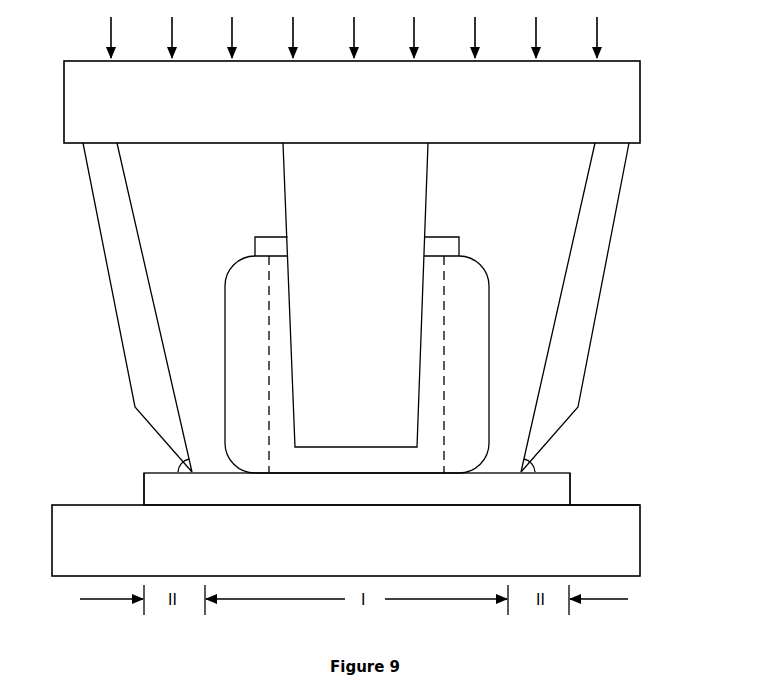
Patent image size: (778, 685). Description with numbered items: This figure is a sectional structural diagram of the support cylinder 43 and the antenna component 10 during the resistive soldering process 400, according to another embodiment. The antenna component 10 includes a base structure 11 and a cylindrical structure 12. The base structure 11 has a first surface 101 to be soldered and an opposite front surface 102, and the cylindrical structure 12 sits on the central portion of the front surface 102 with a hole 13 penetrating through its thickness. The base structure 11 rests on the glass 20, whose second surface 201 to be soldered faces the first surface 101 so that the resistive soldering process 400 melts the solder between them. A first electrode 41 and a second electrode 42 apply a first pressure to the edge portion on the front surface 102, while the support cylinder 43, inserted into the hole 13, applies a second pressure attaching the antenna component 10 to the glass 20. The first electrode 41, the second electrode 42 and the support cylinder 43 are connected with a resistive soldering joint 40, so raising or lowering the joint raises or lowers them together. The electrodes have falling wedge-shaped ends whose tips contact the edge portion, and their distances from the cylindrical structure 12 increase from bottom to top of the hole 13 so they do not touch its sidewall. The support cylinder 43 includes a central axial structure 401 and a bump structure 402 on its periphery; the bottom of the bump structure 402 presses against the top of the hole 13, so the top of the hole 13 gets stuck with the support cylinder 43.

The resistive soldering process 400 is at (598, 33).
The resistive soldering joint 40 is at (623, 101).
The support cylinder 43 is at (307, 295).
The central axial structure 401 is at (300, 177).
The bump structure 402 is at (329, 245).
The antenna component 10 is at (221, 306).
The cylindrical structure 12 is at (463, 383).
The hole 13 is at (433, 354).
The first electrode 41 is at (133, 240).
The second electrode 42 is at (582, 286).
The base structure 11 is at (193, 494).
The front surface 102 is at (143, 470).
The first surface to be soldered 101 is at (549, 503).
The second surface to be soldered 201 is at (658, 468).
The glass 20 is at (612, 549).